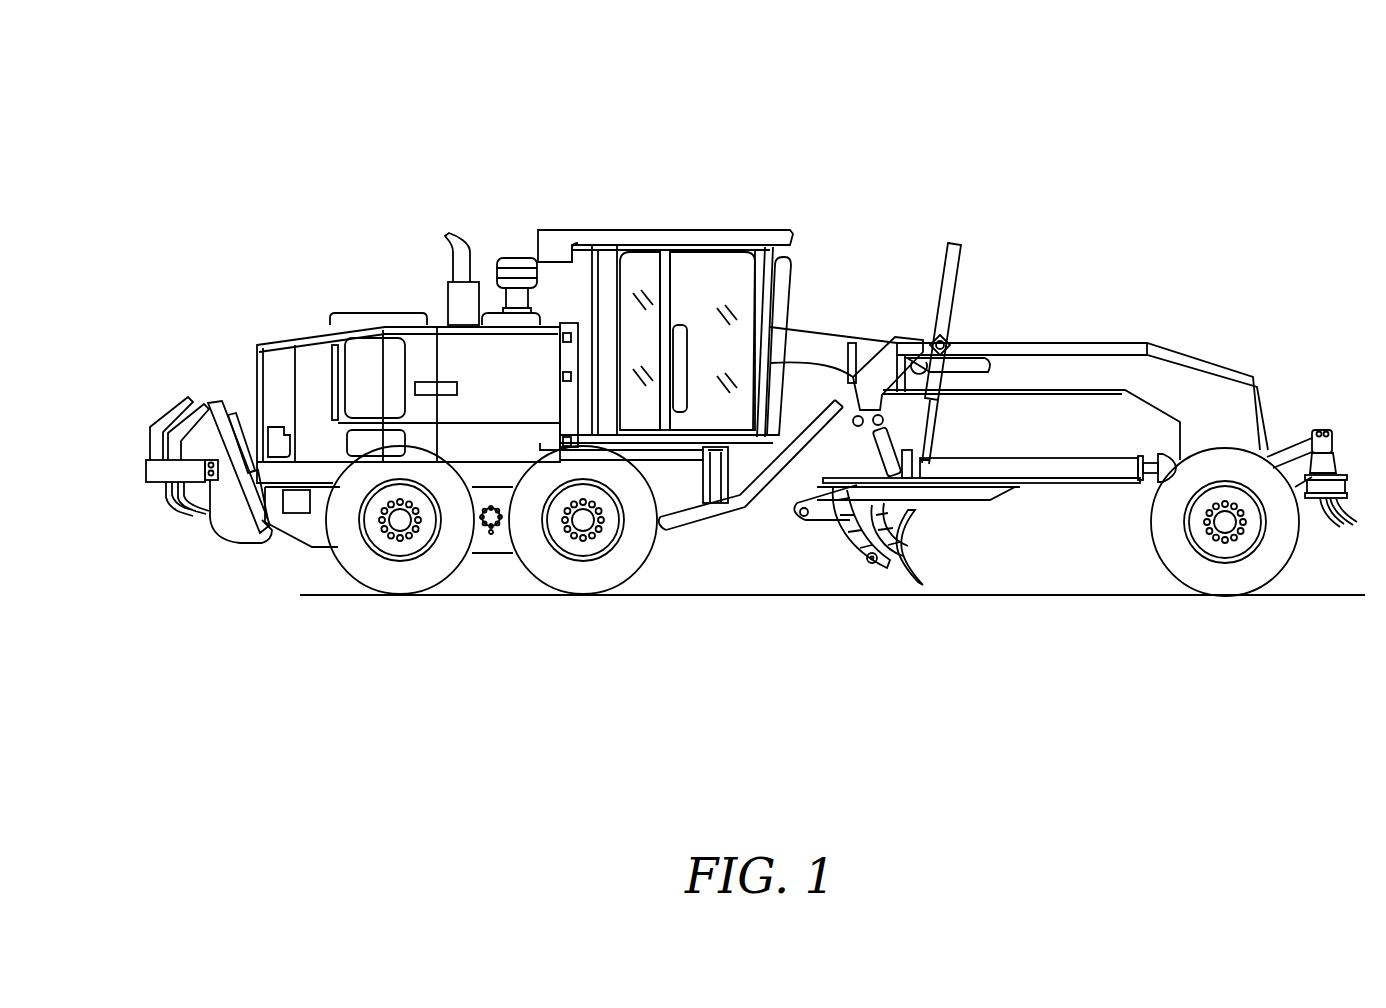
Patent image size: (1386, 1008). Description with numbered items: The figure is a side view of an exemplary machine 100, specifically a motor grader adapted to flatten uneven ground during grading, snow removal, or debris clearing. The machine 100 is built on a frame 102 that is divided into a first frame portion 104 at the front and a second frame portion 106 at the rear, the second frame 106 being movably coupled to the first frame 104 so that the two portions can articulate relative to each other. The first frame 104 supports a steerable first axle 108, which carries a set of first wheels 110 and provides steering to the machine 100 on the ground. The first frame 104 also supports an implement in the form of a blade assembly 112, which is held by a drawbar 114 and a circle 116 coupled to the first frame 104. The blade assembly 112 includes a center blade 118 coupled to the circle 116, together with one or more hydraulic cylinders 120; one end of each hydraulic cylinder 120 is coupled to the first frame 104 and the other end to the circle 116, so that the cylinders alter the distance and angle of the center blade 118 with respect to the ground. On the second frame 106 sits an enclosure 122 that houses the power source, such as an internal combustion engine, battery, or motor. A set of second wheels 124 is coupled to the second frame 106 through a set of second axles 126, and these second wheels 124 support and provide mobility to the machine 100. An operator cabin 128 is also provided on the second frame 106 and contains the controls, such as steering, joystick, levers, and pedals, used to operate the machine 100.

The machine 100 is at (1256, 82).
The frame 102 is at (296, 542).
The first frame portion 104 is at (1170, 373).
The second frame portion 106 is at (697, 513).
The first axle 108 is at (1232, 522).
The first wheels 110 is at (1263, 577).
The blade assembly 112 is at (843, 563).
The drawbar 114 is at (1078, 468).
The circle 116 is at (993, 497).
The center blade 118 is at (915, 568).
The hydraulic cylinders 120 is at (955, 288).
The enclosure 122 is at (313, 347).
The second wheels 124 is at (412, 585).
The second axles 126 is at (396, 525).
The operator cabin 128 is at (740, 231).